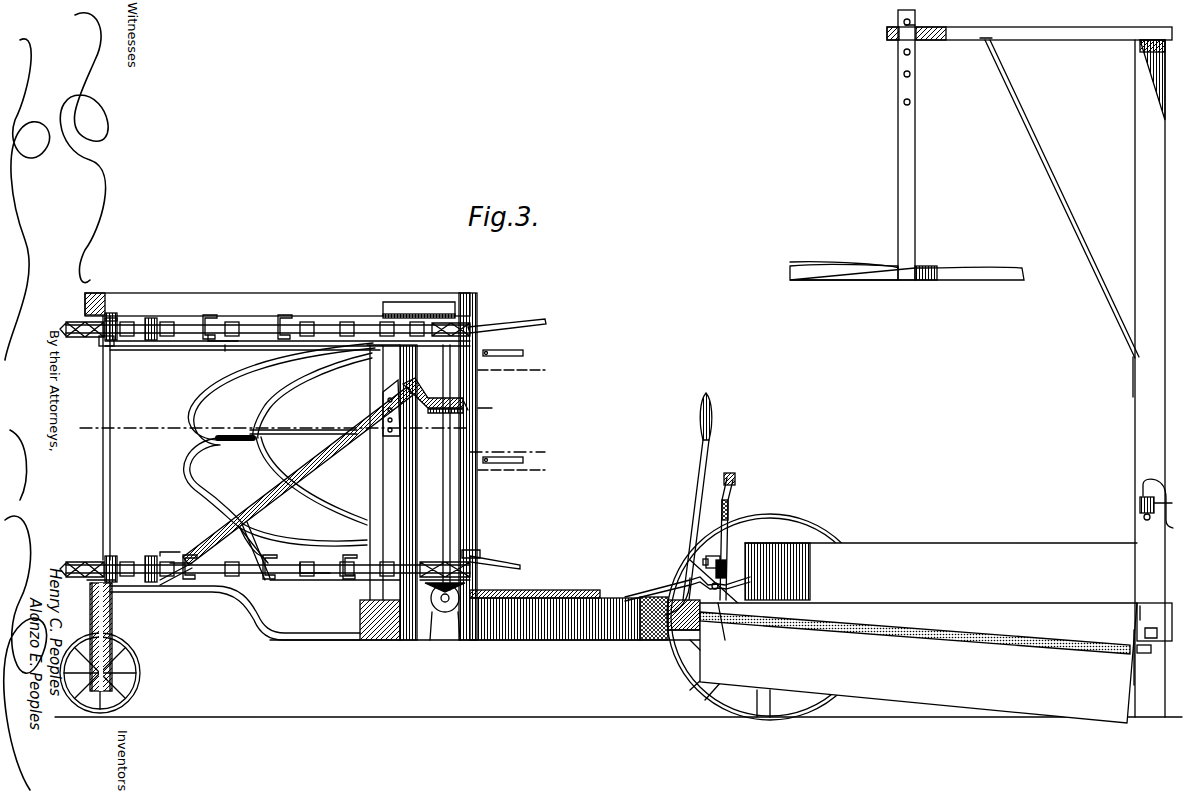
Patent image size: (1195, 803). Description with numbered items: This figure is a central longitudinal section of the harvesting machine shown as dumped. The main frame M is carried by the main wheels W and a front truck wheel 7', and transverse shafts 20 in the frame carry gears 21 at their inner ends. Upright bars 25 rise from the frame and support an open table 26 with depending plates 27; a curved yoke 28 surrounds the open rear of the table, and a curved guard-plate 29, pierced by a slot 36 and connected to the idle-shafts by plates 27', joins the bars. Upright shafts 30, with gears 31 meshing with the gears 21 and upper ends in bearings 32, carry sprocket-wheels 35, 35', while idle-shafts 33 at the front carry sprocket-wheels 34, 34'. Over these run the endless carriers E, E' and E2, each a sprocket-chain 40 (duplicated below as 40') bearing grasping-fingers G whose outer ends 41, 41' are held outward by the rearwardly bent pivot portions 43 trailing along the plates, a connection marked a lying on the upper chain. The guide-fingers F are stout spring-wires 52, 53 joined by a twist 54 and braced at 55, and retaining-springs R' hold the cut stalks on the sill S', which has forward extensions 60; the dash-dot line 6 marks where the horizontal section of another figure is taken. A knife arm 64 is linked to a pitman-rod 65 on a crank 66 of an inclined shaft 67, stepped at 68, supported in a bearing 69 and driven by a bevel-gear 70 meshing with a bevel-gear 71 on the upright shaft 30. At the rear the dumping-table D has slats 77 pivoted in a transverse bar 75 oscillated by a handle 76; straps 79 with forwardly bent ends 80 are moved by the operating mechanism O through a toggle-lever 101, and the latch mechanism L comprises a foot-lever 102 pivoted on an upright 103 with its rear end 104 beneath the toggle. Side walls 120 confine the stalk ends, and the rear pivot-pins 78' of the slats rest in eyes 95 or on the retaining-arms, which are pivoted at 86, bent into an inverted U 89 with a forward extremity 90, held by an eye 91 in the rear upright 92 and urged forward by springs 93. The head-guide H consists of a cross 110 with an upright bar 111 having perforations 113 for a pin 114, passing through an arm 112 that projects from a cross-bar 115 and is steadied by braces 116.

The open table 26 is at (240, 296).
The bearings 32 is at (432, 300).
The curved yoke 28 is at (478, 300).
The outer ends of grasping-fingers 41 is at (268, 317).
The rearwardly bent portion of pivot-pin 43 is at (220, 325).
The endless carriers E is at (278, 318).
The sprocket-wheels on idle-shafts 34 is at (78, 322).
The sprocket-wheels on upright shafts 35 is at (507, 331).
The depending plates 27 is at (287, 352).
The sprocket-chain 40 is at (245, 355).
The connection a is at (230, 346).
The upright idle-shafts 33 is at (112, 450).
The section line 6 is at (307, 438).
The guide-fingers F is at (305, 358).
The spring-wire 52 is at (286, 380).
The twist 54 is at (218, 483).
The braces 55 is at (305, 435).
The shaft 67 is at (300, 476).
The spring-wire 53 is at (320, 520).
The forward extension of sill 60 is at (268, 535).
The upright rods or bars 25 is at (383, 485).
The upright shafts 30 is at (419, 492).
The pitman-rod 65 is at (220, 532).
The bearing 69 is at (383, 405).
The bevel-gear 70 is at (415, 390).
The bevel-gear 71 is at (470, 403).
The curved guard-plate 29 is at (496, 410).
The retaining-springs R' is at (511, 410).
The crank 66 is at (266, 545).
The grasping-fingers G is at (312, 562).
The lower shaft 41' is at (268, 575).
The duplicate sprocket-wheels on idle-shafts 34' is at (78, 557).
The link E2 is at (152, 560).
The slot 36 is at (478, 556).
The duplicate sprocket-wheels on upright shafts 35' is at (498, 551).
The duplicate endless carriers E' is at (536, 561).
The gears 31 is at (468, 580).
The lower front end step of shaft 68 is at (165, 585).
The plates 27' is at (235, 613).
The arm 64 is at (280, 590).
The rod 40' is at (335, 597).
The gears 21 is at (485, 620).
The transverse shafts 20 is at (452, 606).
The front wheel 7' is at (100, 646).
The main frame M is at (585, 626).
The sill S' is at (535, 585).
The main wheels W is at (812, 530).
The straps 79 is at (777, 571).
The side walls 120 is at (941, 551).
The dumping-table D is at (926, 603).
The slats 77 is at (915, 632).
The transverse bar 75 is at (680, 640).
The handle 76 is at (700, 478).
The toggle-lever 101 is at (731, 505).
The operating mechanism O is at (730, 508).
The forwardly-bent ends 80 is at (703, 558).
The latch mechanism L is at (722, 562).
The upright 103 is at (688, 580).
The foot-lever 102 is at (655, 590).
The rear end of foot-lever 104 is at (725, 580).
The rear uprights 92 is at (1150, 378).
The arm 112 is at (1028, 28).
The upright bar 111 is at (915, 158).
The transverse perforations 113 is at (915, 98).
The pin 114 is at (915, 22).
The cross-bar 115 is at (1142, 46).
The inclined braces 116 is at (1052, 168).
The head-guide H is at (937, 212).
The cross 110 is at (940, 270).
The inverted-U bend 89 is at (1145, 484).
The eye or staple 91 is at (1140, 504).
The forwardly bent extremity 90 is at (1144, 517).
The springs 93 is at (1172, 507).
The eyes 95 is at (1154, 622).
The outer end pivot of lower member 86 is at (1150, 652).
The pivot-pins 78' is at (1153, 657).